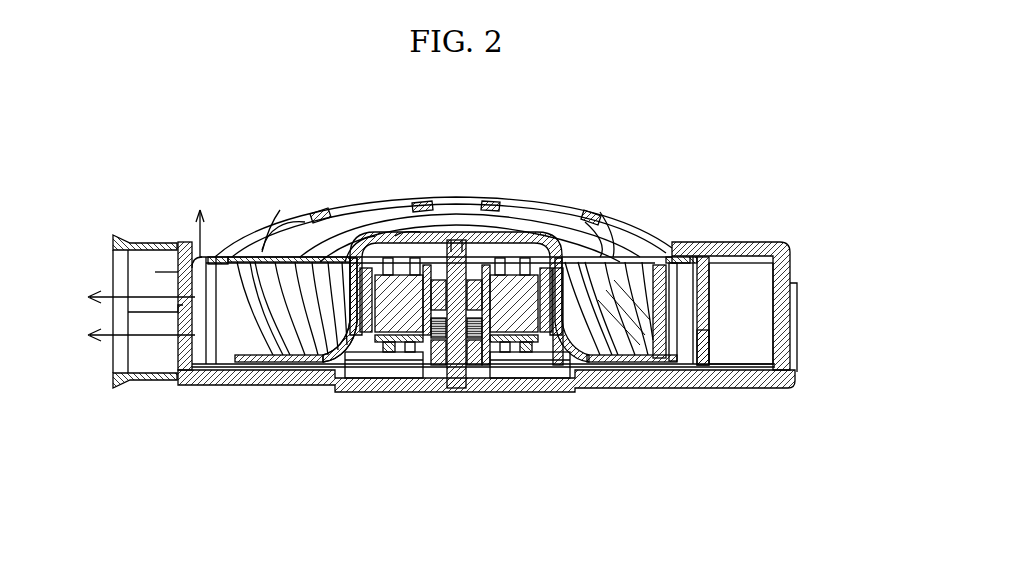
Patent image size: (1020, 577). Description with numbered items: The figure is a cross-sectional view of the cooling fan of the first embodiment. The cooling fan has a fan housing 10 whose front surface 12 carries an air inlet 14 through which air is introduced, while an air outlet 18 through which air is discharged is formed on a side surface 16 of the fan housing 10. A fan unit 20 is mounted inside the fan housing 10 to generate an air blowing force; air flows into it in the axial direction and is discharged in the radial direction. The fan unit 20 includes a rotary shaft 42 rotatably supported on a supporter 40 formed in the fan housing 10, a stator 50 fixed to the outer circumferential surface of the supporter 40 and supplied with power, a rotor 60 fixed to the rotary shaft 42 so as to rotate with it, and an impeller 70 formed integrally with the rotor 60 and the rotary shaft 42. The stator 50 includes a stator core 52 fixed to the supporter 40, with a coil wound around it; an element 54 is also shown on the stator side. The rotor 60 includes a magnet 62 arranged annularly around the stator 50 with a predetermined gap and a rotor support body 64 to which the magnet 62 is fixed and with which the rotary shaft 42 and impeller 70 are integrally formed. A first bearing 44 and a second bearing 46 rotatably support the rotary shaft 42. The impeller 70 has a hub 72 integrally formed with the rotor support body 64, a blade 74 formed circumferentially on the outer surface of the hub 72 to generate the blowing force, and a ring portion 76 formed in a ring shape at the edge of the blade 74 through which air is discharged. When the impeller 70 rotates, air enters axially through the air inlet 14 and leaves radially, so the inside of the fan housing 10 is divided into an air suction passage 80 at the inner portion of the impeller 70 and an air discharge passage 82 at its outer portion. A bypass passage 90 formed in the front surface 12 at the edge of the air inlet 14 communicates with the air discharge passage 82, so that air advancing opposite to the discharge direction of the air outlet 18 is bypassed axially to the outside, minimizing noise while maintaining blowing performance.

The fan housing 10 is at (798, 240).
The front surface 12 is at (718, 243).
The air inlet 14 is at (300, 225).
The side surface 16 is at (782, 362).
The air outlet 18 is at (118, 355).
The fan unit 20 is at (620, 271).
The supporter 40 is at (412, 356).
The rotary shaft 42 is at (455, 388).
The first bearing 44 is at (430, 300).
The second bearing 46 is at (442, 366).
The stator 50 is at (543, 444).
The stator core 52 is at (545, 362).
The insulator 54 is at (520, 362).
The rotor 60 is at (395, 154).
The magnet 62 is at (358, 242).
The rotor support body 64 is at (393, 242).
The impeller 70 is at (710, 308).
The hub 72 is at (572, 372).
The blade 74 is at (628, 335).
The ring portion 76 is at (710, 348).
The air suction passage 80 is at (258, 270).
The air discharge passage 82 is at (738, 294).
The bypass passage 90 is at (197, 266).